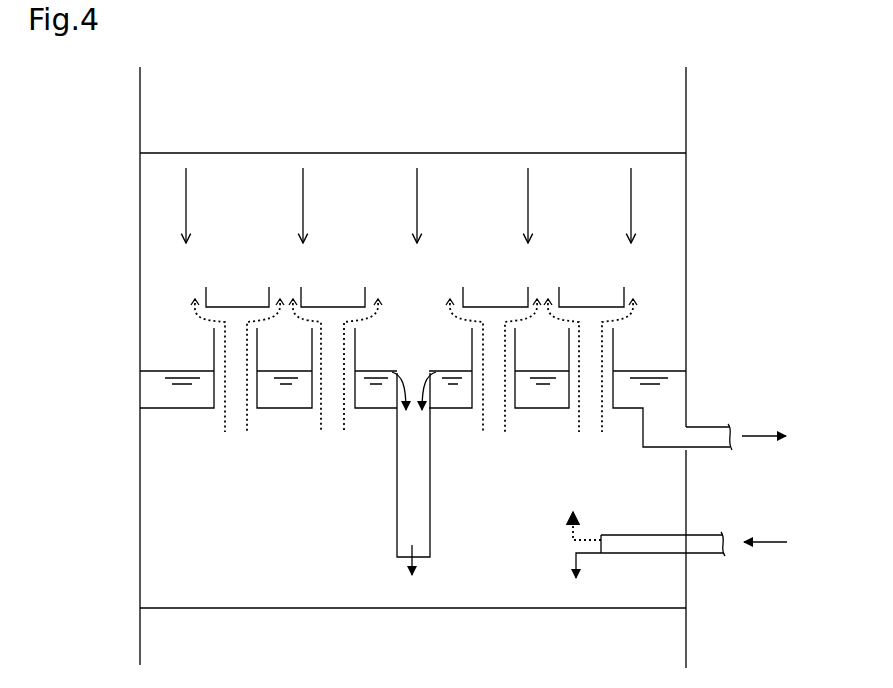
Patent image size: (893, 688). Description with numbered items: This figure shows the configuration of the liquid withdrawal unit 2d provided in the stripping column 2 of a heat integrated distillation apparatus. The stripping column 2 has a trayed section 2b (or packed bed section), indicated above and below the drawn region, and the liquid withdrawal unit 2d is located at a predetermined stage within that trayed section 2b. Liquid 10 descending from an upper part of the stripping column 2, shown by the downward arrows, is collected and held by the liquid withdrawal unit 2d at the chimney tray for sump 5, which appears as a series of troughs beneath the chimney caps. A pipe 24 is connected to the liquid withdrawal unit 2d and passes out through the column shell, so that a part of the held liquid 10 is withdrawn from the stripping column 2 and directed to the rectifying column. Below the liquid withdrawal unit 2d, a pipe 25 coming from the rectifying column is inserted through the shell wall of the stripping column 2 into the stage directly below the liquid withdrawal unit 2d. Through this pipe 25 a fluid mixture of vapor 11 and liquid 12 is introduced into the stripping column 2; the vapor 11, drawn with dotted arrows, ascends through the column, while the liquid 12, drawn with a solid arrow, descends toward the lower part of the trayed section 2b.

The stripping column 2 is at (690, 178).
The trayed section 2b is at (434, 124).
The liquid withdrawal unit 2d is at (660, 303).
The liquid 10 is at (528, 205).
The chimney tray for sump 5 is at (182, 408).
The vapor 11 is at (505, 415).
The liquid 12 is at (568, 566).
The pipe 24 is at (700, 425).
The pipe 25 is at (706, 557).